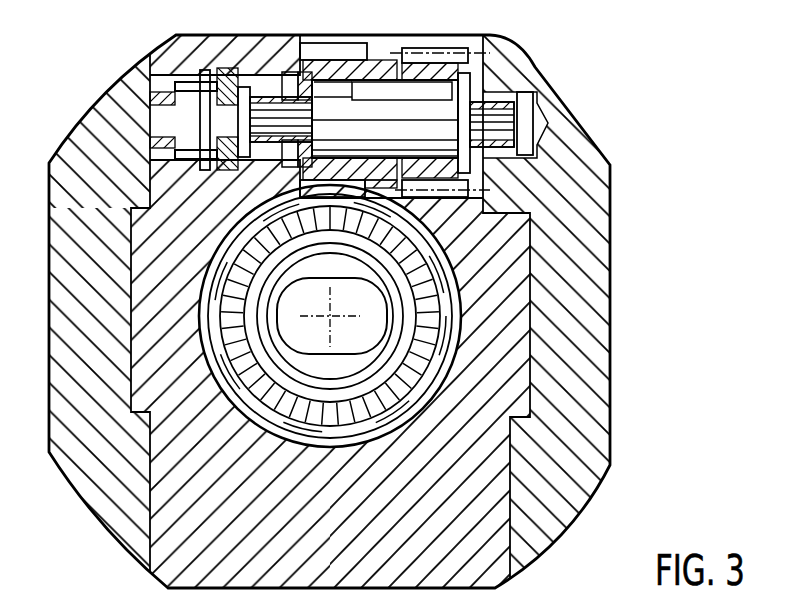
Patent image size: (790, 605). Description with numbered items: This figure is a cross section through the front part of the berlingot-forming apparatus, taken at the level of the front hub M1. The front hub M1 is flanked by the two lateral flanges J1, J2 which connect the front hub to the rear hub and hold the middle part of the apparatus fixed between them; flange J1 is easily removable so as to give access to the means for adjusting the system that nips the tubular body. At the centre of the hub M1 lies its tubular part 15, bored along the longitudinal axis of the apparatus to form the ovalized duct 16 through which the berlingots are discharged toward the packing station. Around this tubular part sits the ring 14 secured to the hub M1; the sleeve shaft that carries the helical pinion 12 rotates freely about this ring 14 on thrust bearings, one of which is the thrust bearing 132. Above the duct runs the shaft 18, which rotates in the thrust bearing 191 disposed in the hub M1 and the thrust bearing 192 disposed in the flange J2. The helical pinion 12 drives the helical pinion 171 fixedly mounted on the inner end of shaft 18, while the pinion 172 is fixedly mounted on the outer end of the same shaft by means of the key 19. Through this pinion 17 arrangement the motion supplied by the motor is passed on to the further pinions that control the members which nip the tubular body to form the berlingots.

The helical pinion 12 is at (412, 372).
The thrust bearing 132 is at (407, 343).
The ring 14 is at (398, 317).
The tubular part 15 is at (385, 293).
The ovalized duct 16 is at (327, 309).
The pinion 17 is at (385, 119).
The helical pinion 171 is at (333, 62).
The pinion 172 is at (430, 97).
The shaft 18 is at (505, 97).
The key 19 is at (440, 113).
The thrust bearing 191 is at (270, 97).
The thrust bearing 192 is at (490, 93).
The lateral flange J1 is at (88, 455).
The lateral flange J2 is at (582, 478).
The front hub M1 is at (478, 558).